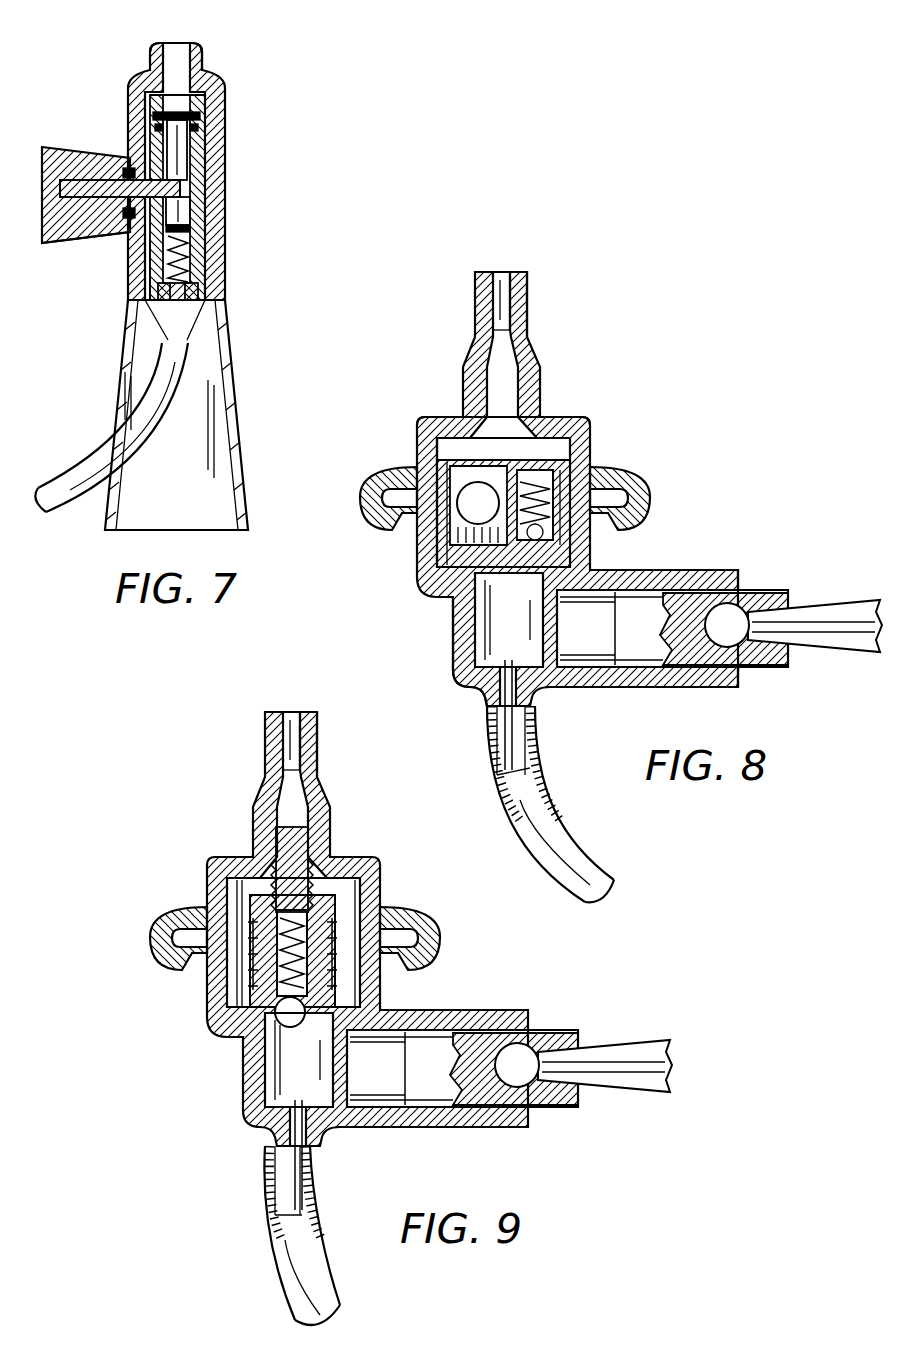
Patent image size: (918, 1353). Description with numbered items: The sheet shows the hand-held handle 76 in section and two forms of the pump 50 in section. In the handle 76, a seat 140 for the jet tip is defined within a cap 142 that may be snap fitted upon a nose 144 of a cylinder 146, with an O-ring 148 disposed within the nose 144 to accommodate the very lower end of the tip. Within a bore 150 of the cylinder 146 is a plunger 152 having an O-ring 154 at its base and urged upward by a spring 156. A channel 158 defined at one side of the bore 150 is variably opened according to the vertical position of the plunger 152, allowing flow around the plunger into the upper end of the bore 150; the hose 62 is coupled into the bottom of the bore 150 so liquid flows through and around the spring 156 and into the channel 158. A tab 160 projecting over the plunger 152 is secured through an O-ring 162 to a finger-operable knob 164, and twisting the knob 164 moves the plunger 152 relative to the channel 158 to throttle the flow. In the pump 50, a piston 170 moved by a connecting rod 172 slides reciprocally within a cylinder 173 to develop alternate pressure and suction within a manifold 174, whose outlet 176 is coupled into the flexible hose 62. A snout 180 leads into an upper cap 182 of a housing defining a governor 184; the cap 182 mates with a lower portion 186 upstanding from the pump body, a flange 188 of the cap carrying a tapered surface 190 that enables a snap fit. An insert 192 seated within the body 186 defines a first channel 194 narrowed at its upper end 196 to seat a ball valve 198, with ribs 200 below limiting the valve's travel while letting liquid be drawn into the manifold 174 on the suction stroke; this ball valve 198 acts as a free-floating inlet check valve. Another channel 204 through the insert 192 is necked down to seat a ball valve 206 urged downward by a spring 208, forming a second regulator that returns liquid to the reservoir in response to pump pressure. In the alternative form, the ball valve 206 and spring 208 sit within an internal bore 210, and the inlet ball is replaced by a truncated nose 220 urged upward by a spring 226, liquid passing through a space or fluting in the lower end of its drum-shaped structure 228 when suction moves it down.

In FIG. 7, the seat 140 is at (186, 46).
In FIG. 7, the cap 142 is at (215, 80).
In FIG. 7, the nose 144 is at (200, 117).
In FIG. 7, the cylinder 146 is at (210, 236).
In FIG. 7, the O-ring 148 is at (198, 128).
In FIG. 7, the bore 150 is at (188, 150).
In FIG. 7, the plunger 152 is at (191, 210).
In FIG. 7, the O-ring 154 is at (150, 246).
In FIG. 7, the spring 156 is at (205, 290).
In FIG. 7, the channel 158 is at (190, 256).
In FIG. 7, the tab 160 is at (180, 186).
In FIG. 7, the O-ring 162 is at (122, 160).
In FIG. 7, the finger-operable knob 164 is at (44, 246).
In FIG. 7, the handle 76 is at (248, 392).
In FIG. 7, the outlet hose 62 is at (80, 470).
In FIG. 8, the outlet hose 62 is at (568, 830).
In FIG. 9, the outlet hose 62 is at (283, 1235).
In FIG. 8, the snout 180 is at (530, 300).
In FIG. 9, the snout 180 is at (318, 744).
In FIG. 8, the upper cap 182 is at (590, 420).
In FIG. 9, the upper cap 182 is at (367, 929).
In FIG. 8, the governor 184 is at (620, 454).
In FIG. 8, the lower portion 186 is at (417, 583).
In FIG. 8, the flange 188 is at (655, 500).
In FIG. 9, the flange 188 is at (410, 938).
In FIG. 8, the tapered surface 190 is at (410, 540).
In FIG. 9, the tapered surface 190 is at (178, 938).
In FIG. 8, the insert 192 is at (566, 532).
In FIG. 8, the first channel 194 is at (440, 470).
In FIG. 8, the upper end 196 is at (437, 446).
In FIG. 8, the ball valve 198 is at (470, 484).
In FIG. 8, the ribs 200 is at (455, 610).
In FIG. 8, the channel 204 is at (546, 535).
In FIG. 8, the ball valve 206 is at (509, 620).
In FIG. 9, the ball valve 206 is at (299, 1060).
In FIG. 8, the spring 208 is at (560, 505).
In FIG. 9, the spring 208 is at (226, 1003).
In FIG. 8, the cylinder 173 is at (652, 574).
In FIG. 8, the piston 170 is at (752, 590).
In FIG. 9, the piston 170 is at (464, 1068).
In FIG. 8, the connecting rod 172 is at (822, 602).
In FIG. 9, the connecting rod 172 is at (583, 1066).
In FIG. 8, the manifold 174 is at (478, 695).
In FIG. 8, the outlet 176 is at (522, 708).
In FIG. 9, the outlet 176 is at (298, 1155).
In FIG. 8, the pump 50 is at (757, 550).
In FIG. 9, the internal bore 210 is at (360, 943).
In FIG. 9, the truncated nose 220 is at (332, 861).
In FIG. 9, the spring 226 is at (346, 927).
In FIG. 9, the drum-shaped structure 228 is at (394, 963).